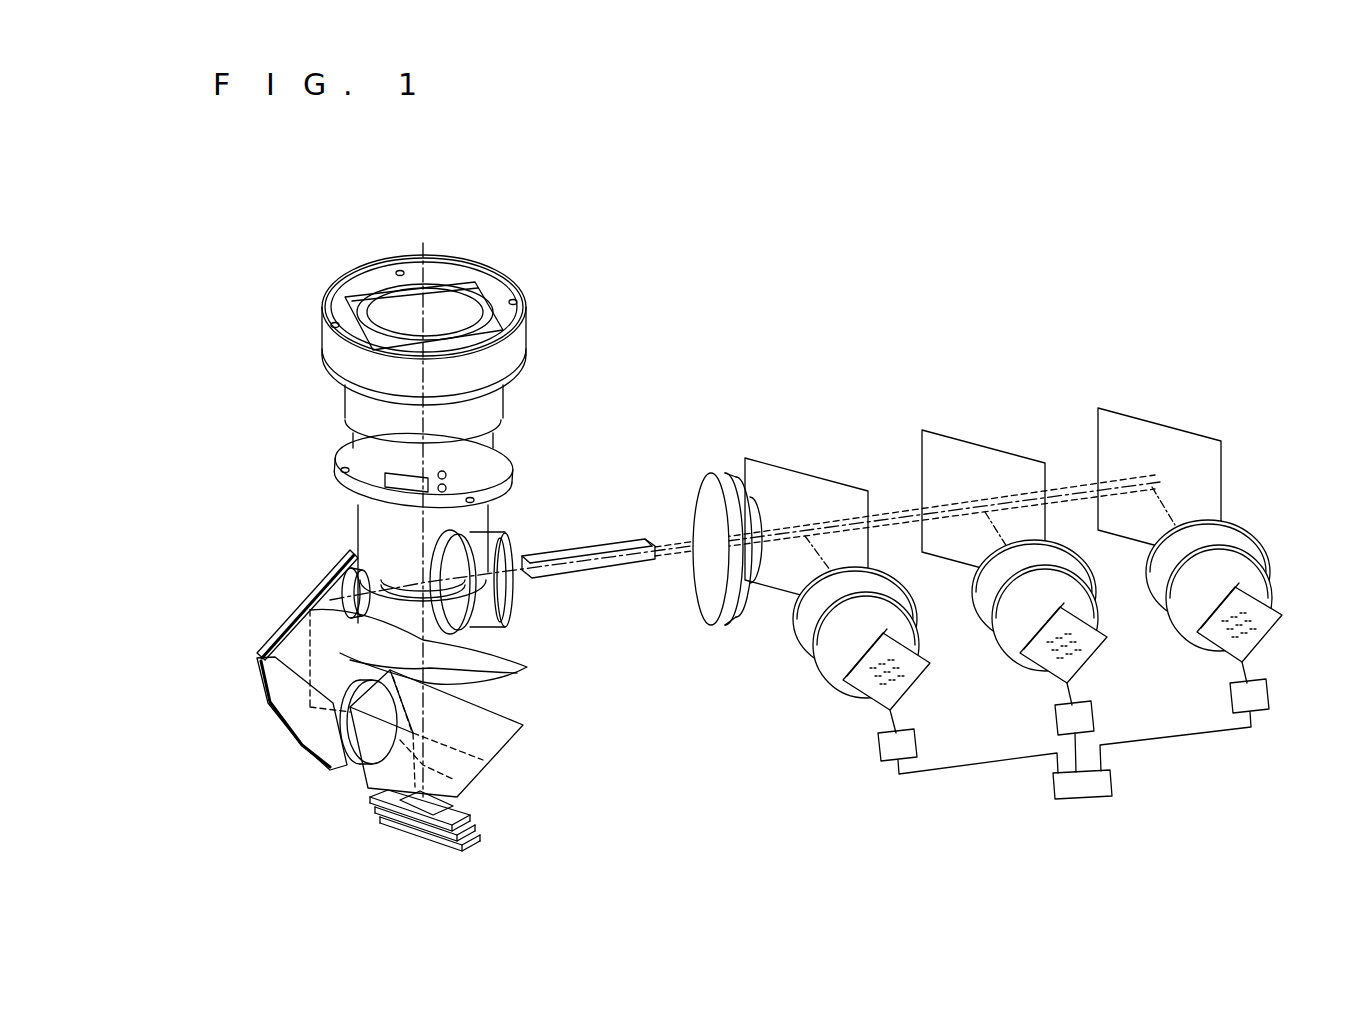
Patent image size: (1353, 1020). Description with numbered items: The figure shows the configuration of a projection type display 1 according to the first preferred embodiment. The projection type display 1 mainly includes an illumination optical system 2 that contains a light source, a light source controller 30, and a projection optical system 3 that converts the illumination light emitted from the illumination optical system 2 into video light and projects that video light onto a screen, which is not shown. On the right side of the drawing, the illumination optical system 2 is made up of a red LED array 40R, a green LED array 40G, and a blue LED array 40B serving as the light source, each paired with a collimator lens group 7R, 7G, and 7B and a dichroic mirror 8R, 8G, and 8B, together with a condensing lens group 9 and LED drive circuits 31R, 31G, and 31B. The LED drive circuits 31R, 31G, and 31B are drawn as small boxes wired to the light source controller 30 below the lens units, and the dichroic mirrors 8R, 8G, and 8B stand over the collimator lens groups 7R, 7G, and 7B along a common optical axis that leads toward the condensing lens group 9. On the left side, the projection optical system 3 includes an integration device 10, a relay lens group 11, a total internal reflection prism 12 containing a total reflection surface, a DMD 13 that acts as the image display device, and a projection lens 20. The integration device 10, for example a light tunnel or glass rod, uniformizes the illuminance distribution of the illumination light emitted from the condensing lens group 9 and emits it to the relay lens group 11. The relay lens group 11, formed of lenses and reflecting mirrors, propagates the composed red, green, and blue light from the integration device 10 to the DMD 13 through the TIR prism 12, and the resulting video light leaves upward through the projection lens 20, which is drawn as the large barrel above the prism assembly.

The projection type display 1 is at (1254, 240).
The illumination optical system 2 is at (948, 346).
The projection optical system 3 is at (645, 356).
The collimator lens group 7R is at (822, 680).
The collimator lens group 7G is at (1000, 648).
The collimator lens group 7B is at (1175, 627).
The dichroic mirror 8R is at (848, 477).
The dichroic mirror 8G is at (1023, 455).
The dichroic mirror 8B is at (1205, 432).
The condensing lens group 9 is at (718, 470).
The integration device 10 is at (588, 572).
The relay lens group 11 is at (527, 667).
The TIR prism 12 is at (518, 740).
The DMD 13 is at (478, 803).
The projection lens 20 is at (500, 417).
The light source controller 30 is at (1080, 787).
The LED drive circuit 31R is at (888, 760).
The LED drive circuit 31G is at (1057, 713).
The LED drive circuit 31B is at (1265, 700).
The red LED array 40R is at (903, 670).
The green LED array 40G is at (1080, 650).
The blue LED array 40B is at (1253, 623).